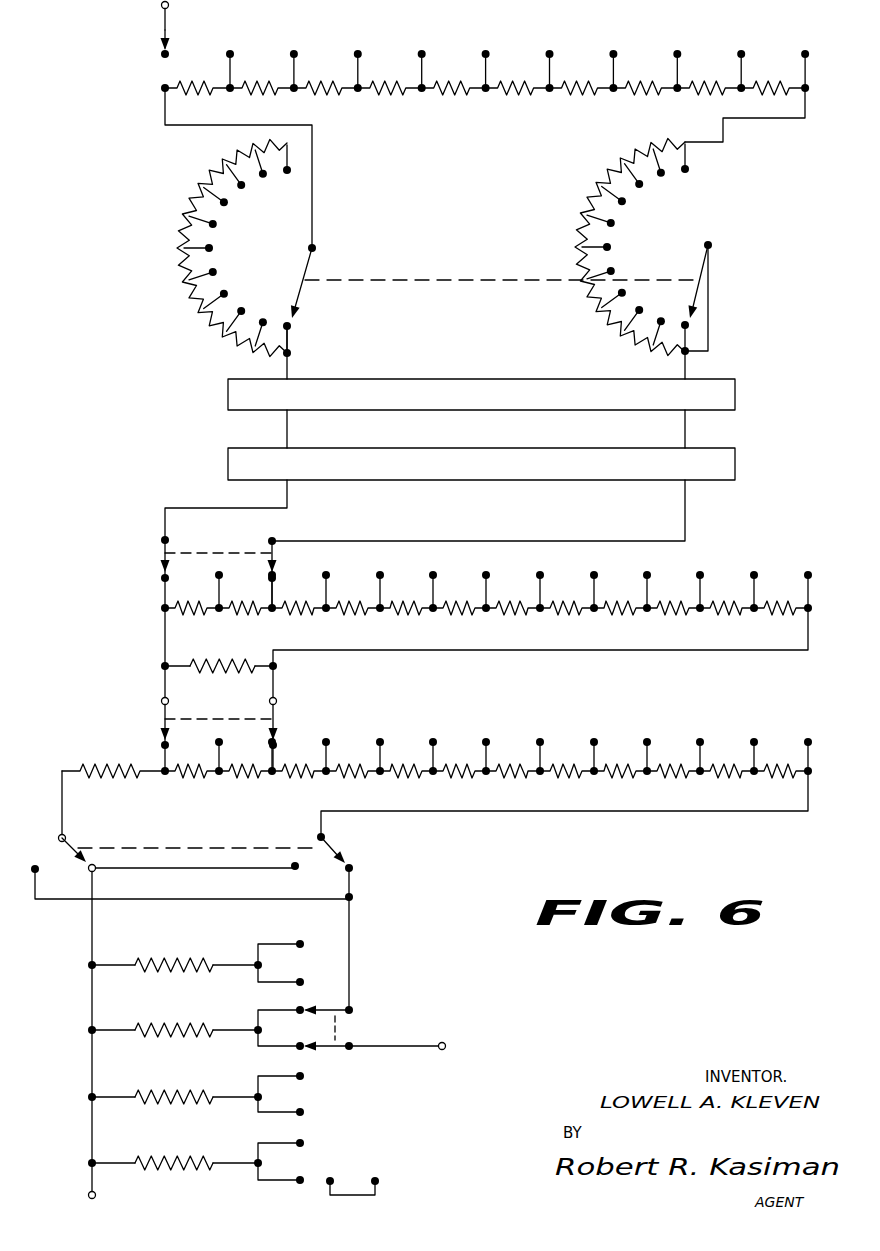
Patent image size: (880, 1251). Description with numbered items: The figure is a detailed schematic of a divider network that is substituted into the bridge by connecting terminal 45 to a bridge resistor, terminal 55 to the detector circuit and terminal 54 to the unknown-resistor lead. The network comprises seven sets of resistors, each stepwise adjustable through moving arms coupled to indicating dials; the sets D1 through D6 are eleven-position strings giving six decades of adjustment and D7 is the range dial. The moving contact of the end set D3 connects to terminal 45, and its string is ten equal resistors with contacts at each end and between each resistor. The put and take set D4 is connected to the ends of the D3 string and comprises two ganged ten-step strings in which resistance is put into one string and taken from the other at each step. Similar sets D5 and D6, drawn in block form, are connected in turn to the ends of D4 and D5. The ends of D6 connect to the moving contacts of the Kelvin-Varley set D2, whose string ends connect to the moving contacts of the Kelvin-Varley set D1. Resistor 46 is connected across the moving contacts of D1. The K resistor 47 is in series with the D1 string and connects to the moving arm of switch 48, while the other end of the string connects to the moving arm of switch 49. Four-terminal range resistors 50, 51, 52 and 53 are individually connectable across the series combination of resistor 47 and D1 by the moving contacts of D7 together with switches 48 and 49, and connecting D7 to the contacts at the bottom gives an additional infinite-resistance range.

The terminal 45 is at (162, 8).
The put and take resistor set D3 is at (178, 31).
The put and take resistor set D4 is at (470, 281).
The put and take resistor set D5 is at (481, 394).
The put and take resistor set D6 is at (481, 464).
The Kelvin-Varley resistor set D2 is at (232, 550).
The resistor 46 is at (240, 663).
The Kelvin-Varley resistor set D1 is at (232, 716).
The K resistor 47 is at (120, 768).
The switch 48 is at (79, 845).
The switch 49 is at (336, 852).
The range resistor 50 is at (189, 962).
The range resistor 51 is at (181, 1027).
The range resistor 52 is at (193, 1094).
The range resistor 53 is at (186, 1160).
The terminal 54 is at (88, 1196).
The terminal 55 is at (444, 1042).
The range dial set D7 is at (356, 1030).